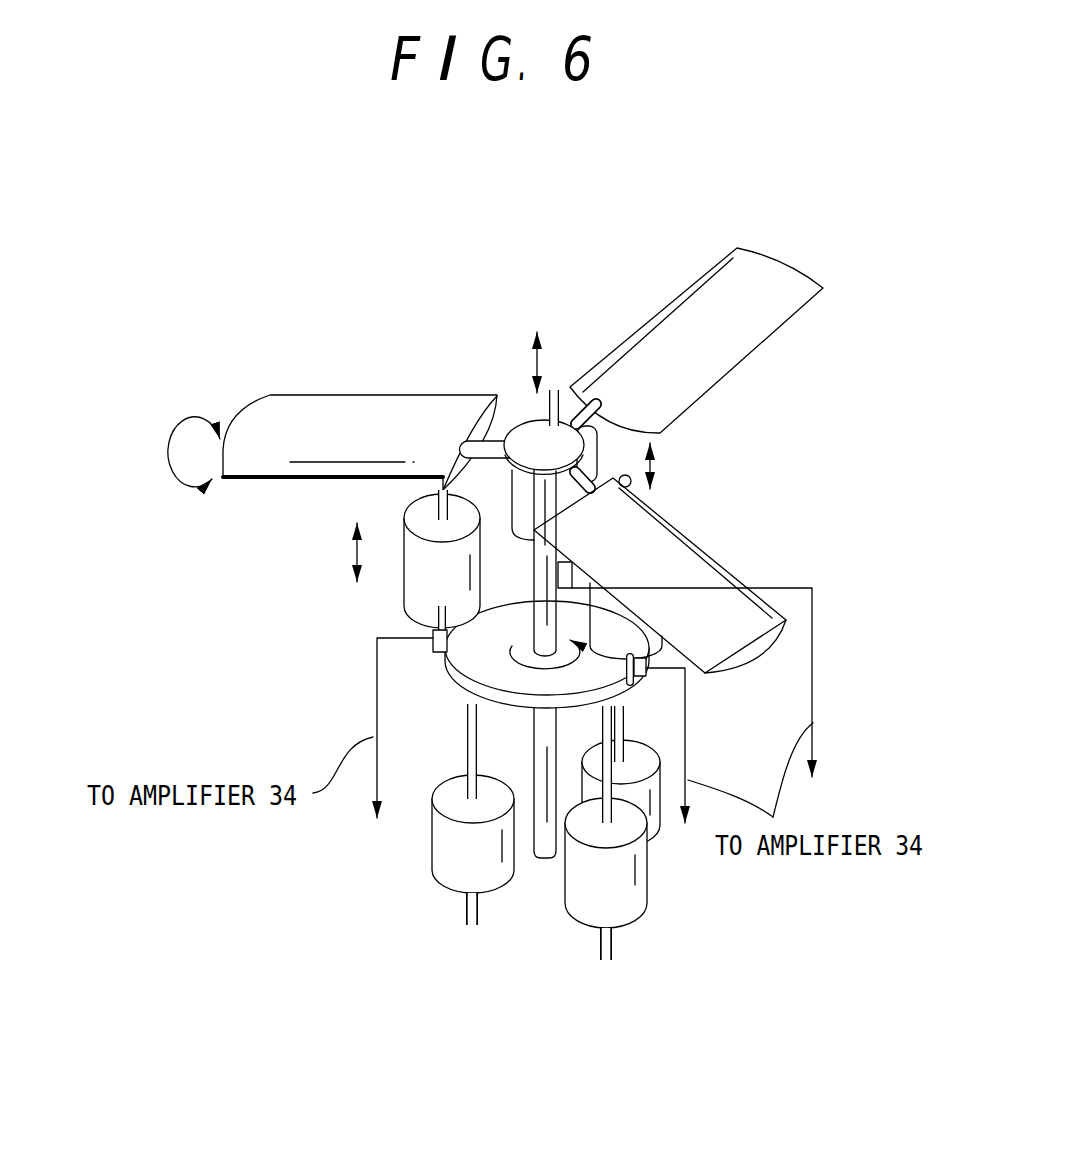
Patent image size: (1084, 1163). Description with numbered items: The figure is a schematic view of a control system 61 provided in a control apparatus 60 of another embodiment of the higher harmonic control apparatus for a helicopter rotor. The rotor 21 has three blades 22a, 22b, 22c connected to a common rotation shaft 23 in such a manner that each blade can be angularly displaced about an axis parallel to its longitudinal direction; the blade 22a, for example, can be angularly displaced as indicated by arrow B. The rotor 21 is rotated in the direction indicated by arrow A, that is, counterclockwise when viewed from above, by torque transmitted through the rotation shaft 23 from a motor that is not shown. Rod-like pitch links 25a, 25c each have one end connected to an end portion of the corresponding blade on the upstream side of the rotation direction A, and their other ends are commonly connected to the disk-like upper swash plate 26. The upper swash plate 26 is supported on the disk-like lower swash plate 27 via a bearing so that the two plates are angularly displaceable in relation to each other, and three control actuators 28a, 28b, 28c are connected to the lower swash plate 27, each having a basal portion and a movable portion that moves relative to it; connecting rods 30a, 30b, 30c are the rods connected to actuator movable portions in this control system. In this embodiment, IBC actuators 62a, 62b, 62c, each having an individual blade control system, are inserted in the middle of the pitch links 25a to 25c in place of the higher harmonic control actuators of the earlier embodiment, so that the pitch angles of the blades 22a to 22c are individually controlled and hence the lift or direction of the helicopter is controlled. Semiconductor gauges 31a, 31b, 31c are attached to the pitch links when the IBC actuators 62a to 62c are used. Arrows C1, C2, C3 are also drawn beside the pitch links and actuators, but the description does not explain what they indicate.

The control apparatus 60 is at (555, 240).
The rotor 21 is at (443, 345).
The blade 22a is at (277, 458).
The blade 22b is at (703, 548).
The blade 22c is at (757, 318).
The rotation shaft 23 is at (560, 563).
The pitch link 25a is at (415, 503).
The pitch link 25c is at (548, 410).
The upper swash plate 26 is at (509, 610).
The lower swash plate 27 is at (518, 710).
The control actuator 28a is at (458, 872).
The control actuator 28b is at (627, 900).
The control actuator 28c is at (660, 813).
The connecting rod 30a is at (467, 758).
The connecting rod 30b is at (602, 790).
The connecting rod 30c is at (626, 720).
The semiconductor gauge 31a is at (436, 650).
The semiconductor gauge 31b is at (648, 666).
The semiconductor gauge 31c is at (574, 576).
The control system 61 is at (803, 475).
The IBC actuator 62a is at (390, 600).
The IBC actuator 62b is at (607, 613).
The IBC actuator 62c is at (598, 450).
The rotation direction A is at (542, 672).
The angular displacement direction B is at (172, 448).
The reciprocating motion C1 is at (355, 553).
The reciprocating motion C2 is at (656, 465).
The reciprocating motion C3 is at (550, 353).